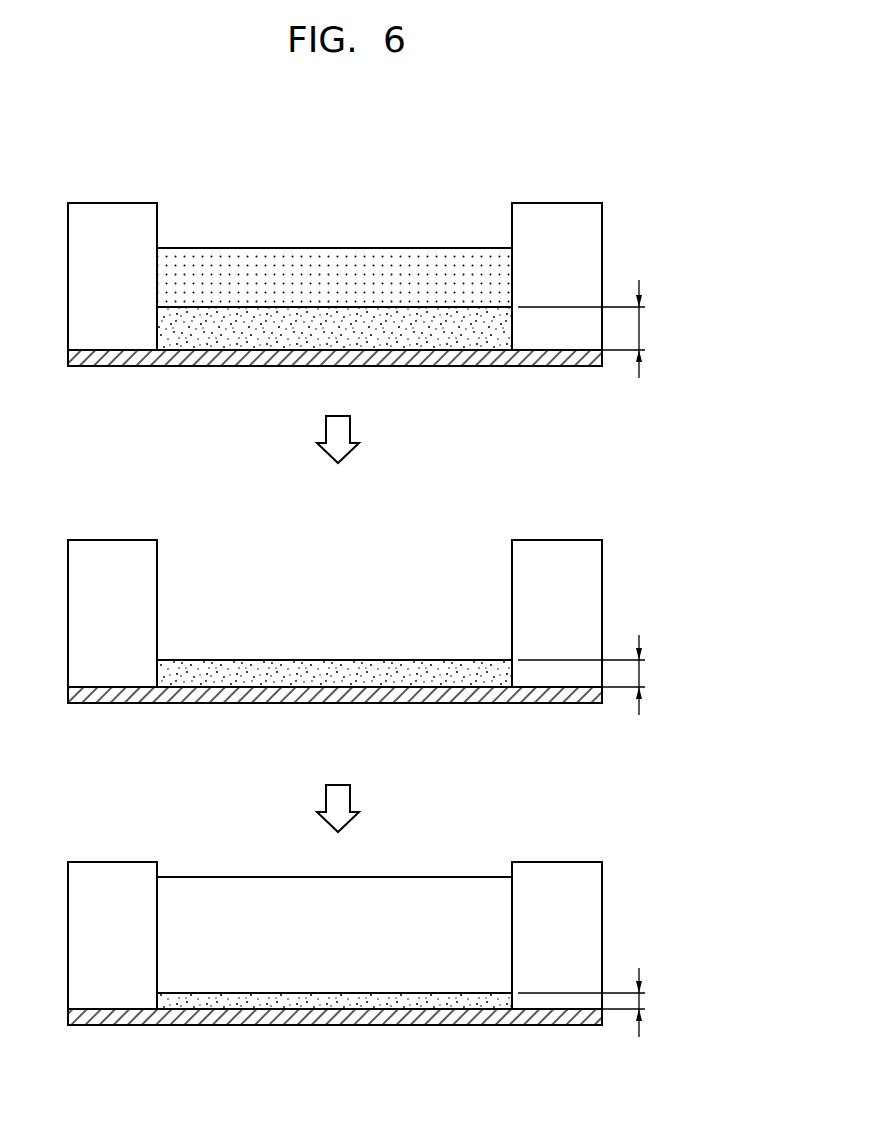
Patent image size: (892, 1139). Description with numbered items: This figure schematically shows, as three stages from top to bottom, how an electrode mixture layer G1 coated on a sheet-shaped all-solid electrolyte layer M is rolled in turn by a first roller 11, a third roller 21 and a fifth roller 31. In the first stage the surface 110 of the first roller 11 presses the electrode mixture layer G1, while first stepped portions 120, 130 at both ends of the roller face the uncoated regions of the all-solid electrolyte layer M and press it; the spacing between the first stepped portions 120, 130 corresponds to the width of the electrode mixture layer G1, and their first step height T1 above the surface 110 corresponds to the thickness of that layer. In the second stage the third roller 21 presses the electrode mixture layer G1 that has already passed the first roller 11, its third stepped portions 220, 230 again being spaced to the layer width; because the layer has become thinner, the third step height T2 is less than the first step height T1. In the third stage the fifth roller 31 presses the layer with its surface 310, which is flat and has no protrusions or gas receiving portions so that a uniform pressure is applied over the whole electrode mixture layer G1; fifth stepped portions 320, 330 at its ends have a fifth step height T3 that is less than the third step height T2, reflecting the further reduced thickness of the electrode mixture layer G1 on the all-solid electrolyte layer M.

The first roller 11 is at (617, 179).
The surface of the first roller 110 is at (321, 226).
The first stepped portion 120 is at (557, 208).
The first stepped portion 130 is at (117, 208).
The electrode mixture layer G1 is at (255, 340).
The all-solid electrolyte layer M is at (430, 352).
The first step height T1 is at (596, 329).
The third roller 21 is at (617, 516).
The third stepped portion 220 is at (371, 763).
The third stepped portion 230 is at (117, 545).
The third step height T2 is at (596, 675).
The fifth roller 31 is at (617, 839).
The surface of the fifth roller 310 is at (453, 856).
The fifth stepped portion 320 is at (557, 867).
The fifth stepped portion 330 is at (117, 867).
The fifth step height T3 is at (596, 1002).